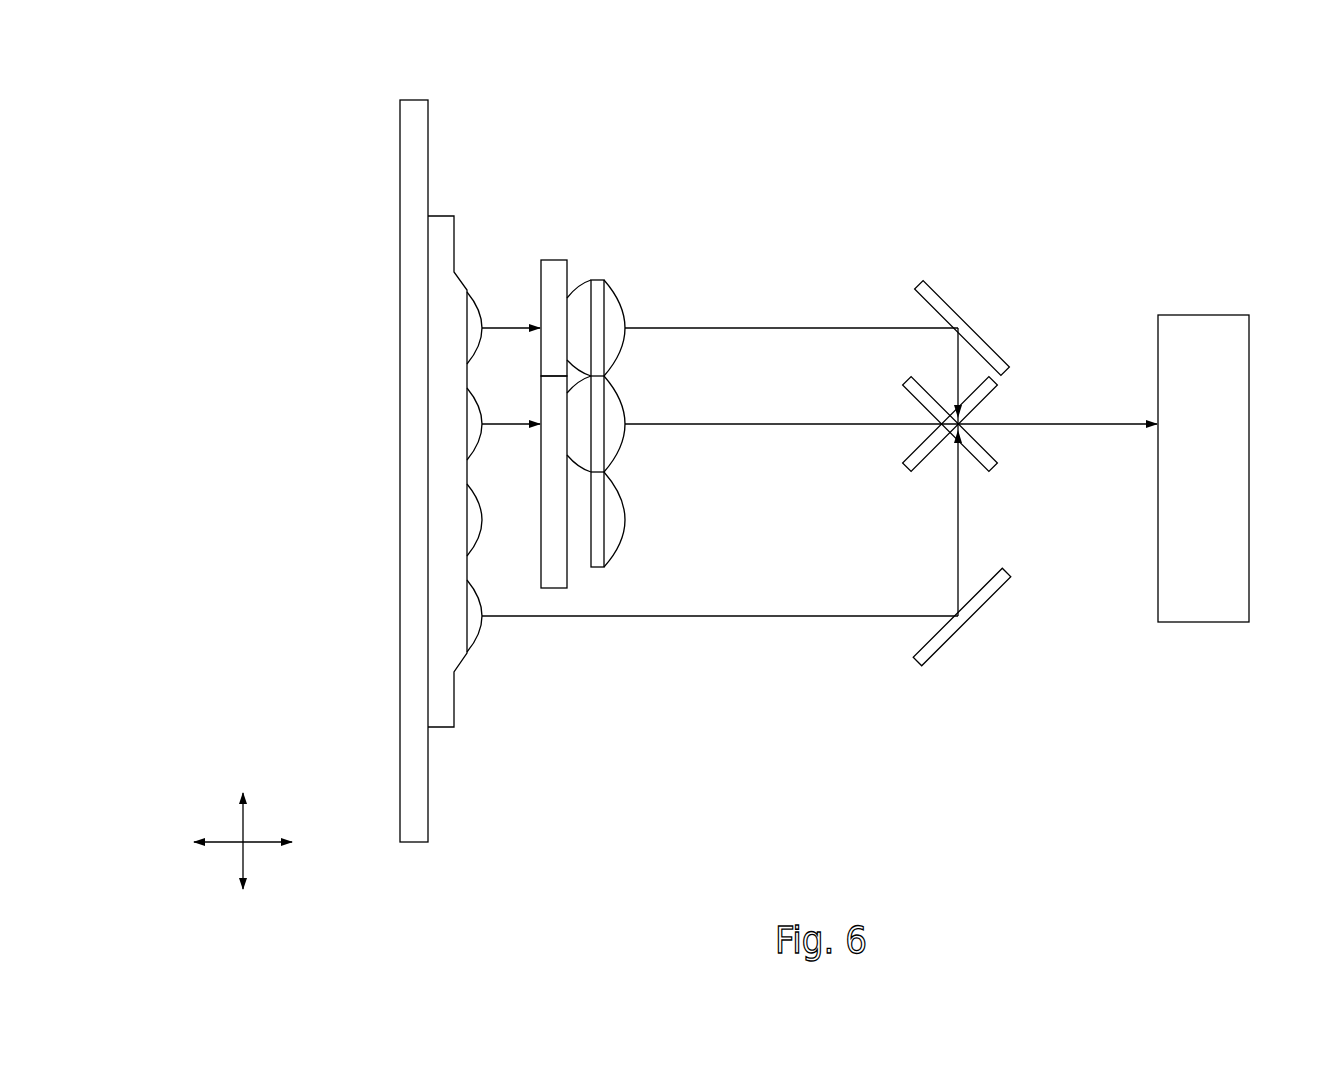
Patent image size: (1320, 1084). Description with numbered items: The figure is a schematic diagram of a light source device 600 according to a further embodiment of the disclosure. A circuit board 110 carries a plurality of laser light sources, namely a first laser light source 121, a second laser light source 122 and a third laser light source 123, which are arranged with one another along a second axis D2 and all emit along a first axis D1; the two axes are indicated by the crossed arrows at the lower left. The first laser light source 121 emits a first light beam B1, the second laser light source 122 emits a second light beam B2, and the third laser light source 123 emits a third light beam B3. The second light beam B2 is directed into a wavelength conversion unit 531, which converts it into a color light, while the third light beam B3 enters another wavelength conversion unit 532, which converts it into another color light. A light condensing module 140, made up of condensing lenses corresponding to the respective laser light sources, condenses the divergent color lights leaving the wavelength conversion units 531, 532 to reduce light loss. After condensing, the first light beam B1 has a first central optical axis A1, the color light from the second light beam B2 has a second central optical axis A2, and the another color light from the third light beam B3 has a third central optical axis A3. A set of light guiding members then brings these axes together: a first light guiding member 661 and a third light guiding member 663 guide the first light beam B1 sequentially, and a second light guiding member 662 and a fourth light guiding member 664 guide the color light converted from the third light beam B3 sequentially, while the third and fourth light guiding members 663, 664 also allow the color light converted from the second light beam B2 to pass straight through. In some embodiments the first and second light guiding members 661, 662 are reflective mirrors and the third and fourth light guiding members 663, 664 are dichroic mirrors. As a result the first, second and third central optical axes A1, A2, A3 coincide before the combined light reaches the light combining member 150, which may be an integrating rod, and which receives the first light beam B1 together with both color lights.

The light source device 600 is at (298, 67).
The circuit board 110 is at (413, 100).
The first laser light source 121 is at (481, 632).
The second laser light source 122 is at (481, 440).
The third laser light source 123 is at (472, 298).
The light condensing module 140 is at (620, 300).
The light combining member 150 is at (1200, 315).
The wavelength conversion unit 531 is at (552, 590).
The wavelength conversion unit 532 is at (552, 260).
The first light guiding member 661 is at (980, 632).
The second light guiding member 662 is at (946, 286).
The third light guiding member 663 is at (918, 470).
The fourth light guiding member 664 is at (995, 470).
The first central optical axis A1 is at (781, 616).
The second central optical axis A2 is at (781, 423).
The third central optical axis A3 is at (781, 328).
The first light beam B1 is at (508, 614).
The second light beam B2 is at (508, 422).
The third light beam B3 is at (508, 326).
The first axis D1 is at (246, 840).
The second axis D2 is at (242, 842).